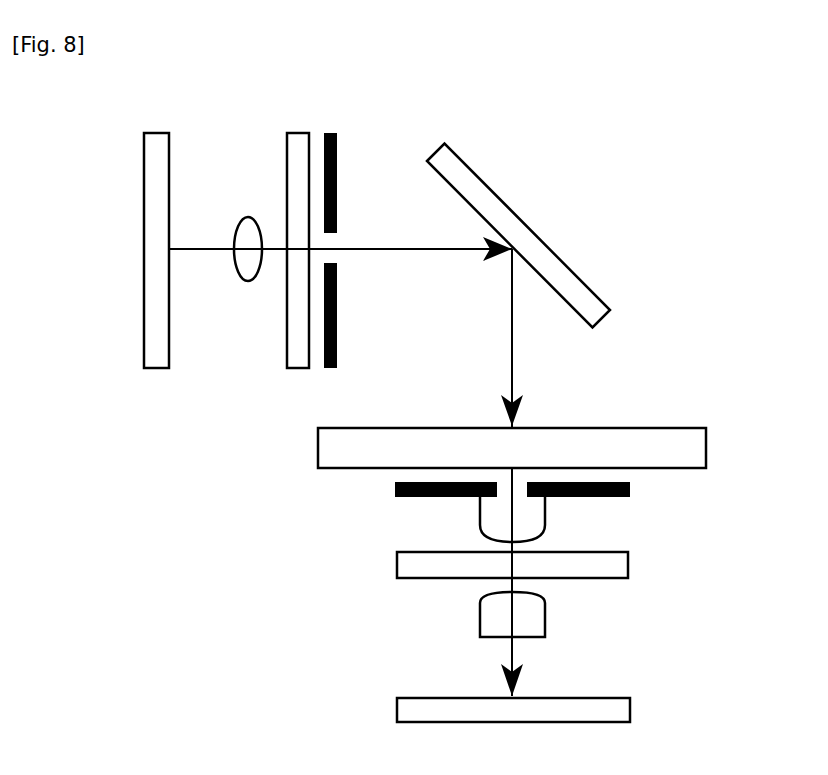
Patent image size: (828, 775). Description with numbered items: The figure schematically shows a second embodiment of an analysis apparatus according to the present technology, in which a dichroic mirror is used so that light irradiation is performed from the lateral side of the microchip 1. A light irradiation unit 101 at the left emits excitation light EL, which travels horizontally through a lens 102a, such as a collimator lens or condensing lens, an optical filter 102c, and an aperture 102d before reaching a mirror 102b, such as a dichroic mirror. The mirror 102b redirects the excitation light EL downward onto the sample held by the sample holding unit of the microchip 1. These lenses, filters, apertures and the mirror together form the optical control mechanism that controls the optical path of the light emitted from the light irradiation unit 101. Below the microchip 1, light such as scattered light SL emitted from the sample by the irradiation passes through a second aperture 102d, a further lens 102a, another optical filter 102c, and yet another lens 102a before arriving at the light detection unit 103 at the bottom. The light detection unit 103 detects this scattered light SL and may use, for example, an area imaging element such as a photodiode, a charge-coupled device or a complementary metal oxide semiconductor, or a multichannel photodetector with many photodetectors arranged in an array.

The microchip 1 is at (672, 440).
The light irradiation unit 101 is at (157, 183).
The lens 102a is at (248, 228).
The mirror 102b is at (583, 300).
The optical filter 102c is at (292, 163).
The aperture 102d is at (337, 172).
The light detection unit 103 is at (603, 707).
The excitation light EL is at (346, 332).
The scattered light SL is at (529, 582).